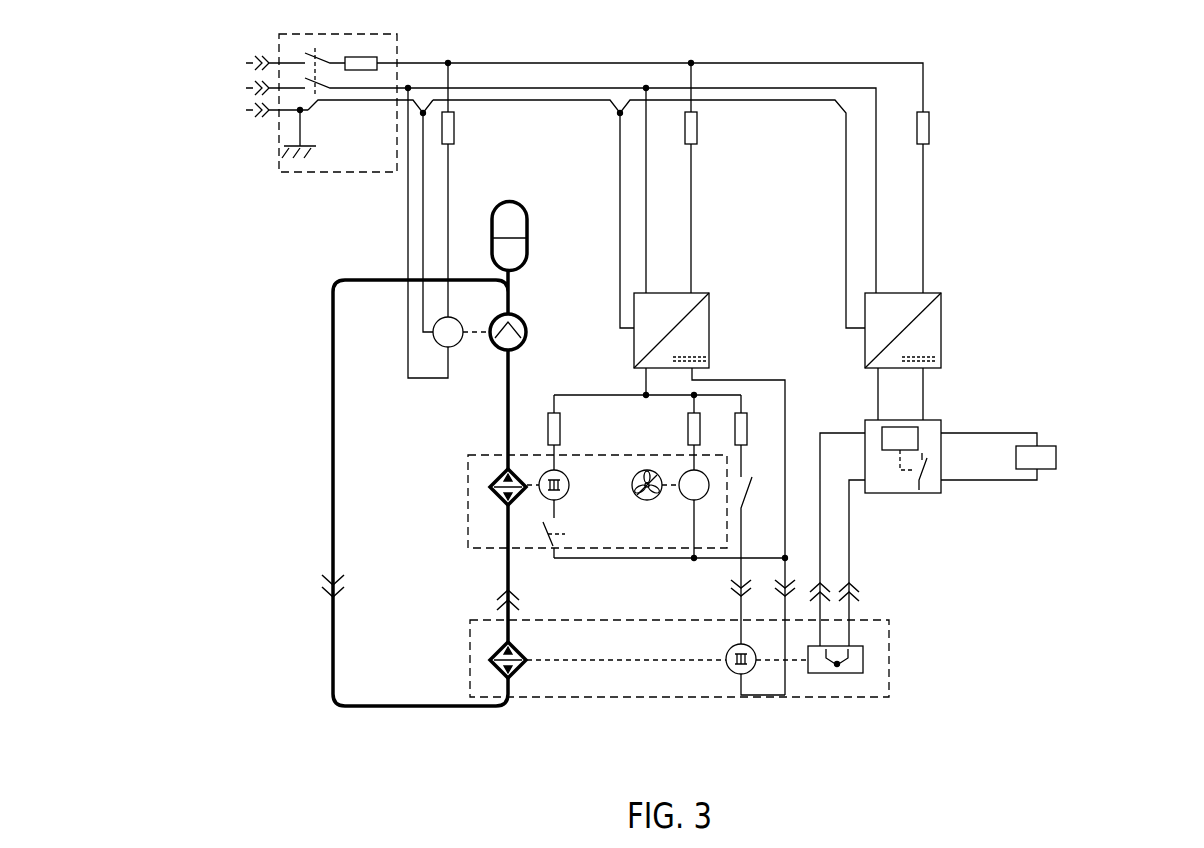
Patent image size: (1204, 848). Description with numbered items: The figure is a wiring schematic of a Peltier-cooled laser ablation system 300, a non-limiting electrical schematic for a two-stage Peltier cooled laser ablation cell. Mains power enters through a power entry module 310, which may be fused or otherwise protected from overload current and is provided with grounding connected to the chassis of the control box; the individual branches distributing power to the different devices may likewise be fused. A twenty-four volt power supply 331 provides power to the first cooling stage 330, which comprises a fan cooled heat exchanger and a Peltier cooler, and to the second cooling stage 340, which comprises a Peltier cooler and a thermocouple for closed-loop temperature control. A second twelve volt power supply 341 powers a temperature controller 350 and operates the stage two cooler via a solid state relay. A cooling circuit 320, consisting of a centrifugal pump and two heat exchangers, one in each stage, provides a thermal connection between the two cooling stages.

The system 300 is at (1098, 93).
The power entry module 310 is at (352, 152).
The cooling circuit 320 is at (332, 455).
The first cooling stage 330 is at (468, 497).
The 24V power supply 331 is at (710, 318).
The second cooling stage 340 is at (846, 697).
The 12V power supply 341 is at (941, 318).
The temperature controller 350 is at (1020, 433).